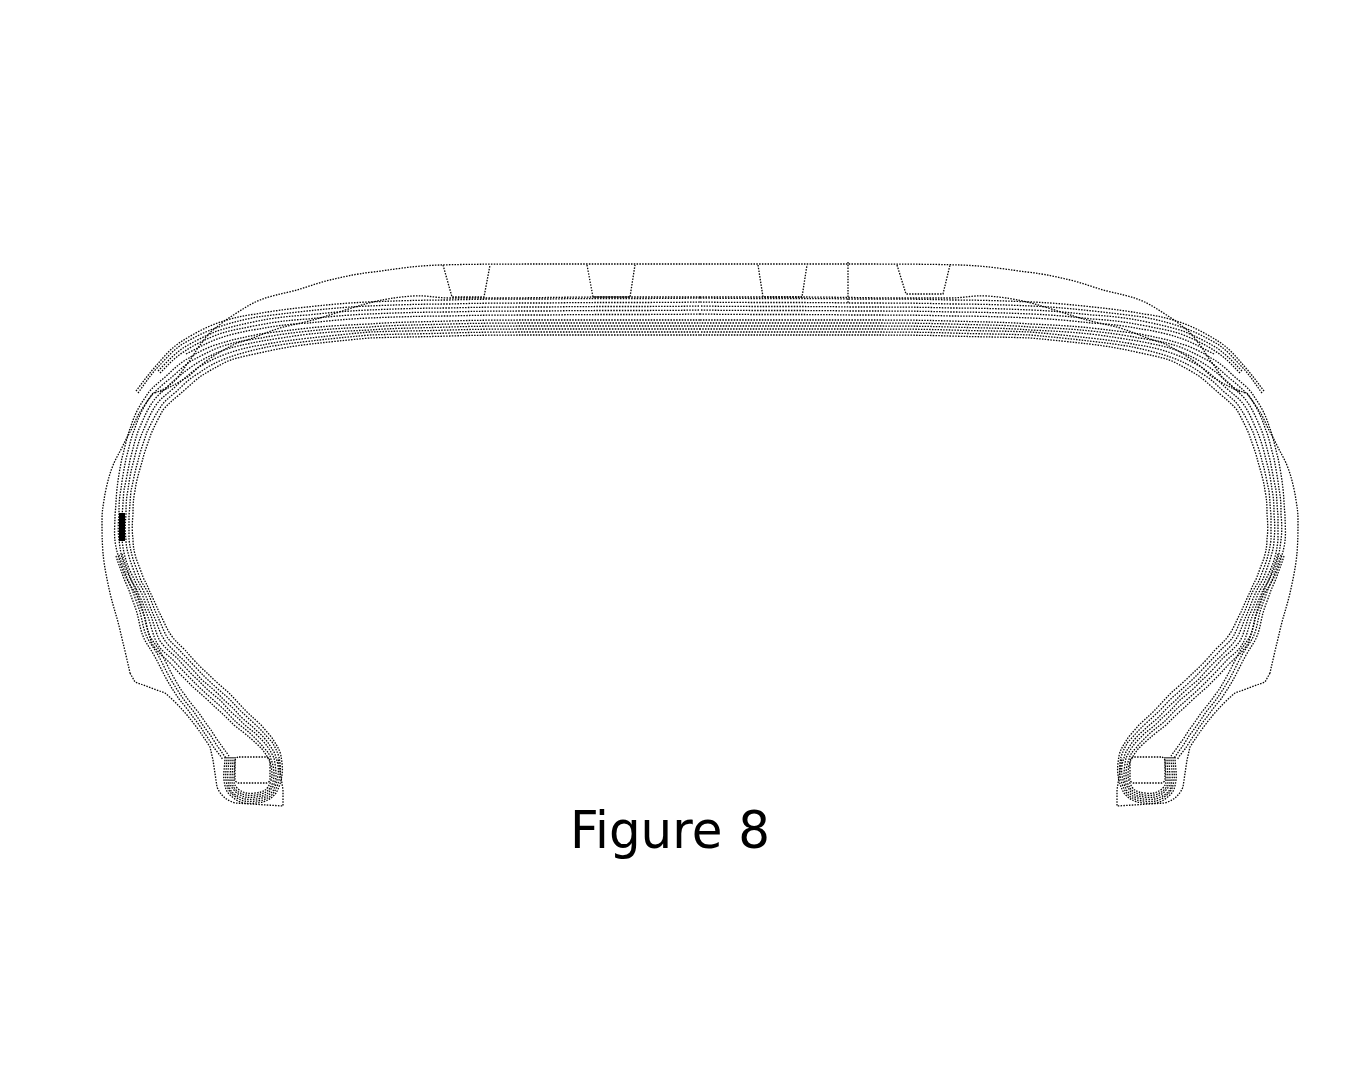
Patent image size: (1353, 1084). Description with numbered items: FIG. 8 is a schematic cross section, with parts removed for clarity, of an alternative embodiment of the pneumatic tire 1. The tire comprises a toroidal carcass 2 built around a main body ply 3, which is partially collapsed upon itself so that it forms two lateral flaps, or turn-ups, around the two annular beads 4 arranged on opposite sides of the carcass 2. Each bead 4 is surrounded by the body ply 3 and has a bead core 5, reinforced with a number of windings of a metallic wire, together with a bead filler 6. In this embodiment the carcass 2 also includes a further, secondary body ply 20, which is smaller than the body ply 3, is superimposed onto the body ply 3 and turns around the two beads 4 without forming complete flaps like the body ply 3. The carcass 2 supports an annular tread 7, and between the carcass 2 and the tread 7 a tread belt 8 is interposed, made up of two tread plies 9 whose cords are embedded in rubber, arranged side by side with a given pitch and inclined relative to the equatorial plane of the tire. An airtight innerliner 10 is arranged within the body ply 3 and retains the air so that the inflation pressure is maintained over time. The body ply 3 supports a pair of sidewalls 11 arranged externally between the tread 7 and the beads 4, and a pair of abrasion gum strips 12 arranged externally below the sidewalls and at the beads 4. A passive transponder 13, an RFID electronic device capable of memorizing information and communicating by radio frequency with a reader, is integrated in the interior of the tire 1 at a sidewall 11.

The pneumatic tire 1 is at (233, 203).
The toroidal carcass 2 is at (700, 270).
The body ply 3 is at (700, 559).
The annular bead 4 is at (700, 710).
The bead core 5 is at (252, 772).
The bead filler 6 is at (199, 690).
The tread 7 is at (540, 280).
The tread belt 8 is at (700, 374).
The tread ply 9 is at (604, 318).
The innerliner 10 is at (268, 364).
The sidewall 11 is at (117, 478).
The abrasion gum strip 12 is at (196, 717).
The transponder 13 is at (128, 526).
The body ply 20 is at (141, 457).